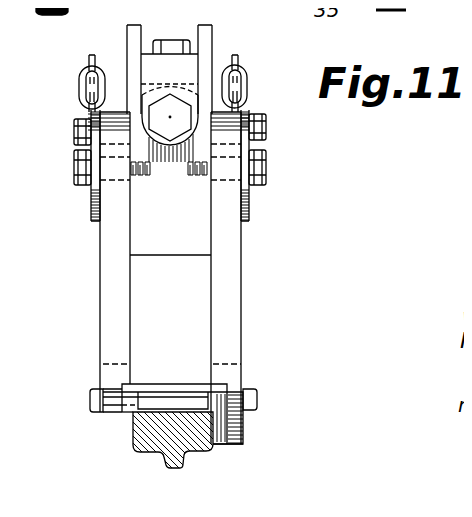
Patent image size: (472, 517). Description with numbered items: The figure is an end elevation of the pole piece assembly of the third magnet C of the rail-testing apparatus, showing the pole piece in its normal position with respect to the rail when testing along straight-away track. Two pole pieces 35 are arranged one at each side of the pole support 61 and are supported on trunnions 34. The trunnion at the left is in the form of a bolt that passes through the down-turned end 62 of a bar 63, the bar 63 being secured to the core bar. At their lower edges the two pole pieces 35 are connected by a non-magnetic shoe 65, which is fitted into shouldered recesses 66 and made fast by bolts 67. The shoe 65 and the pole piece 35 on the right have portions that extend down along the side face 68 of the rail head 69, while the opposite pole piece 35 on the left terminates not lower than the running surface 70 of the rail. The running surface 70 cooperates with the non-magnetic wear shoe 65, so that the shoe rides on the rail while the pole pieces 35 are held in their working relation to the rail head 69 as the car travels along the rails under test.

The trunnion 34 is at (158, 106).
The pole piece 35 is at (112, 275).
The pole support 61 is at (188, 240).
The down-turned end 62 is at (180, 139).
The bar 63 is at (185, 58).
The non-magnetic shoe 65 is at (190, 385).
The shouldered recess 66 is at (228, 381).
The bolt 67 is at (95, 398).
The side face 68 is at (228, 442).
The rail head 69 is at (132, 430).
The running surface 70 is at (167, 388).
The third magnet C is at (243, 241).